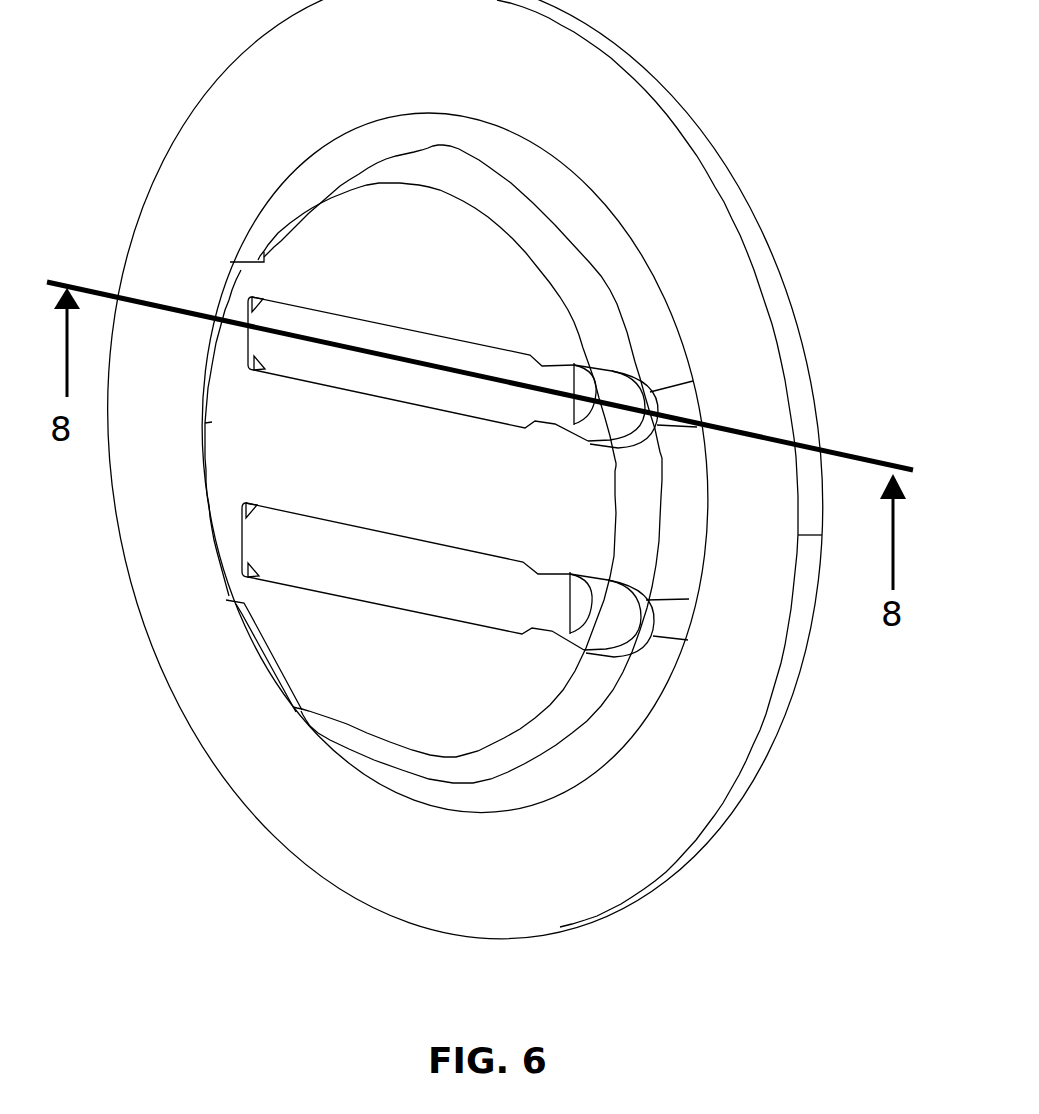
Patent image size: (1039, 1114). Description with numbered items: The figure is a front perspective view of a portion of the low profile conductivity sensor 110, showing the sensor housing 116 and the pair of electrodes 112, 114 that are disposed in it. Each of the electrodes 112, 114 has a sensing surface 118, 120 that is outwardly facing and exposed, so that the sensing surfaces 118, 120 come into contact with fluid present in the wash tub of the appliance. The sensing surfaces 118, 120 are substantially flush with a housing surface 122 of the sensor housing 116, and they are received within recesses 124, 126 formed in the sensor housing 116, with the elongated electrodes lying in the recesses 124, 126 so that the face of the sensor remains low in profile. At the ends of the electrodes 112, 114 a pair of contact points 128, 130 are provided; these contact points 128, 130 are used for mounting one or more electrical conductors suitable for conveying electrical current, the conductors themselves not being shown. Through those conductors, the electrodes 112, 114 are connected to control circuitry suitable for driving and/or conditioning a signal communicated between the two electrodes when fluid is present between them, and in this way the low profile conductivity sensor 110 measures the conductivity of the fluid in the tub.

The low profile conductivity sensor 110 is at (157, 91).
The electrode 112 is at (416, 336).
The electrode 114 is at (364, 537).
The sensor housing 116 is at (150, 223).
The sensing surface 118 is at (495, 412).
The sensing surface 120 is at (475, 599).
The housing surface 122 is at (466, 488).
The recess 124 is at (567, 438).
The recess 126 is at (540, 637).
The contact point 128 is at (571, 390).
The contact point 130 is at (560, 592).